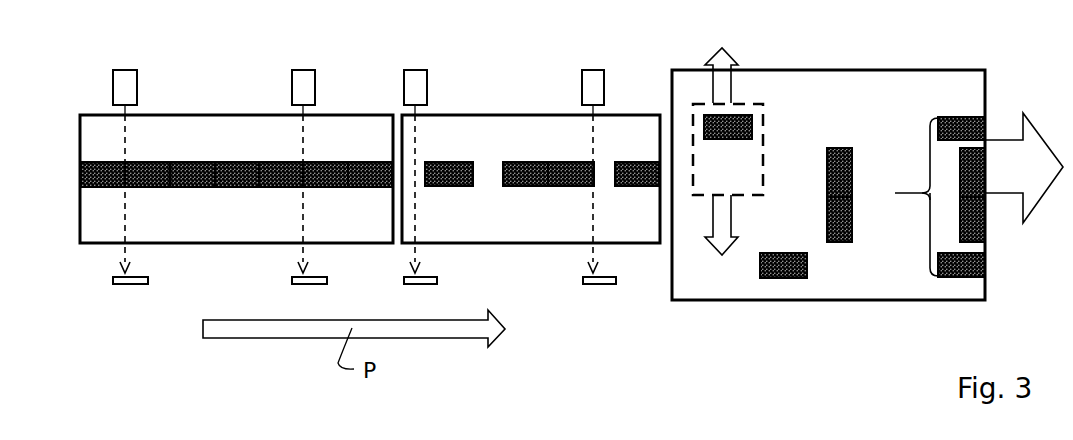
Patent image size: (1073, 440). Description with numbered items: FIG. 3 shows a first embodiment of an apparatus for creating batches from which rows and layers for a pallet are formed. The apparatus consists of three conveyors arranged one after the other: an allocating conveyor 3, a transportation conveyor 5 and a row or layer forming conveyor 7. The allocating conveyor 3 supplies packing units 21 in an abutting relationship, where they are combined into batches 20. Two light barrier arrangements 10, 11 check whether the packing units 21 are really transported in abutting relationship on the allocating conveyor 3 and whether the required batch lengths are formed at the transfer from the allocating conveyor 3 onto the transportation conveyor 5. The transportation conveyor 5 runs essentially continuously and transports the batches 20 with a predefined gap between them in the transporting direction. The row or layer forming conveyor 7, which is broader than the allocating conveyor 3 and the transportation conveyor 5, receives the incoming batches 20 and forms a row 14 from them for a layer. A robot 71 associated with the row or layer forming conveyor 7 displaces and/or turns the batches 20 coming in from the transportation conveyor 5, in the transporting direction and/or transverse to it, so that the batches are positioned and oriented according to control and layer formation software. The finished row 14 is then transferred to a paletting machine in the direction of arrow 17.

The allocating conveyor 3 is at (197, 243).
The transportation conveyor 5 is at (505, 114).
The row or layer forming conveyor 7 is at (867, 302).
The light barrier arrangement 10 is at (135, 73).
The light barrier arrangement 11 is at (600, 73).
The row 14 is at (925, 143).
The arrow 17 is at (1028, 179).
The batch 20 is at (453, 187).
The packing unit 21 is at (240, 162).
The robot 71 is at (763, 125).